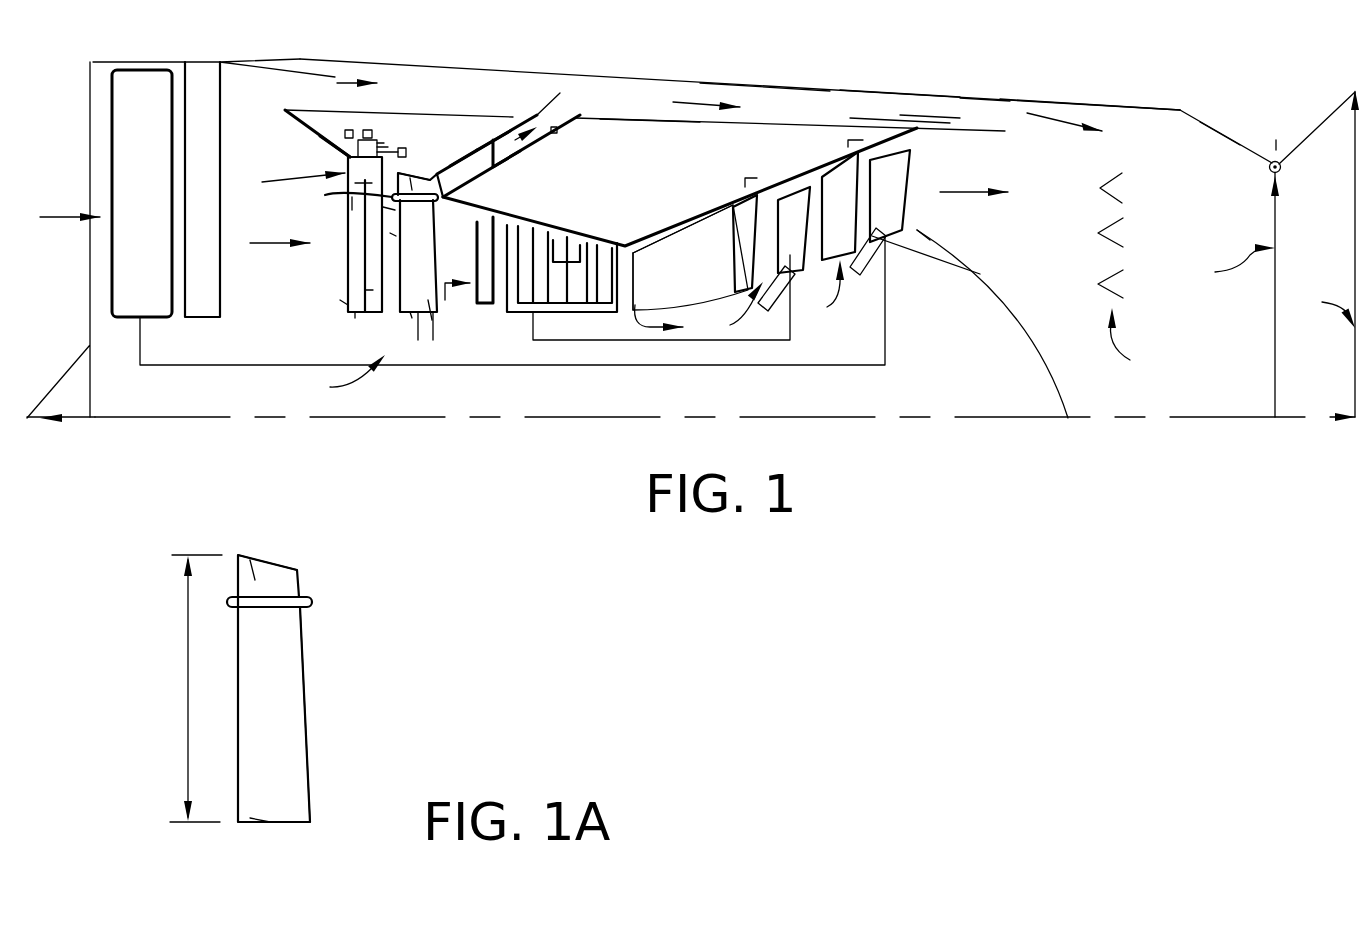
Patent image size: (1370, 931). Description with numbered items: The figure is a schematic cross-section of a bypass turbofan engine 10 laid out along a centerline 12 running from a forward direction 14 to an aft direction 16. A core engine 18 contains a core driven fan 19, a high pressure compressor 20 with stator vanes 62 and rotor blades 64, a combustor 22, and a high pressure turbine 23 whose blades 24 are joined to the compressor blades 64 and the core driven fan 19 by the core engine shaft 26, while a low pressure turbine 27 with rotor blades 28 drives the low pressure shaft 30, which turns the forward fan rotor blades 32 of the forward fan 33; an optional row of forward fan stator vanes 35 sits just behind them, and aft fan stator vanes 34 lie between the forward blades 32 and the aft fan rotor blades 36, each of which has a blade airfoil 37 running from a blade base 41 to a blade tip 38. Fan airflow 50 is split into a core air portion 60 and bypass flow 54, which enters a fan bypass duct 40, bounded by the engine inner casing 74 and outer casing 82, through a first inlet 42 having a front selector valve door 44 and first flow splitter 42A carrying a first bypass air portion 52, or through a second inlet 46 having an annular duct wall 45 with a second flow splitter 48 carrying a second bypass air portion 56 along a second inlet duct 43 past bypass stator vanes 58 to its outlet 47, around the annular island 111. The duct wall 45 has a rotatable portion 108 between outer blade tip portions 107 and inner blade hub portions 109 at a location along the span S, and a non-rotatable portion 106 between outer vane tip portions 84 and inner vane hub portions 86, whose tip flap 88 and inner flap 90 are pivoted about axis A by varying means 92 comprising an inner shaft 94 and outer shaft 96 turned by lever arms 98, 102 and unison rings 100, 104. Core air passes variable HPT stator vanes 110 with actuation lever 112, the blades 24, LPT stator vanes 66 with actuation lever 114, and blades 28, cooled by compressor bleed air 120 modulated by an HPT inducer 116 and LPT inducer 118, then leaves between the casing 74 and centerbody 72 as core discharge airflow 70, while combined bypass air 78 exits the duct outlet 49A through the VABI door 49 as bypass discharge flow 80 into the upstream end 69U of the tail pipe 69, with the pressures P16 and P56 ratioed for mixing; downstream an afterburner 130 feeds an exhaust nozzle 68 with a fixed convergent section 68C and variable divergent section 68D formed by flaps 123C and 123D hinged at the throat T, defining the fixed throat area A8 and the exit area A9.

In FIG. 1, the bypass turbofan engine 10 is at (626, 52).
In FIG. 1, the centerline 12 is at (960, 417).
In FIG. 1, the forward direction 14 is at (100, 420).
In FIG. 1, the aft direction 16 is at (1300, 420).
In FIG. 1, the core engine 18 is at (660, 210).
In FIG. 1, the core driven fan 19 is at (341, 377).
In FIG. 1, the high pressure compressor 20 is at (553, 212).
In FIG. 1, the combustor 22 is at (673, 279).
In FIG. 1, the high pressure turbine 23 is at (699, 311).
In FIG. 1, the high pressure turbine blades 24 is at (800, 198).
In FIG. 1, the core engine shaft 26 is at (540, 345).
In FIG. 1, the low pressure turbine 27 is at (819, 290).
In FIG. 1, the low pressure turbine rotor blades 28 is at (893, 223).
In FIG. 1, the low pressure shaft 30 is at (665, 366).
In FIG. 1, the forward fan rotor blades 32 is at (123, 171).
In FIG. 1, the forward fan 33 is at (163, 351).
In FIG. 1, the aft fan stator vanes 34 is at (355, 318).
In FIG. 1, the forward fan stator vanes 35 is at (200, 75).
In FIG. 1, the aft fan rotor blades 36 is at (410, 316).
In FIG. 1A, the aft fan rotor blades 36 is at (277, 825).
In FIG. 1, the blade airfoil 37 is at (348, 268).
In FIG. 1A, the blade airfoil 37 is at (253, 720).
In FIG. 1, the blade tip 38 is at (402, 172).
In FIG. 1A, the blade tip 38 is at (268, 562).
In FIG. 1, the fan bypass duct 40 is at (766, 100).
In FIG. 1A, the blade base 41 is at (250, 818).
In FIG. 1, the first inlet 42 is at (247, 96).
In FIG. 1, the first flow splitter 42A is at (286, 108).
In FIG. 1, the second inlet duct 43 is at (558, 131).
In FIG. 1, the front selector valve door 44 is at (293, 66).
In FIG. 1, the annular duct wall 45 is at (392, 234).
In FIG. 1, the second inlet 46 is at (289, 185).
In FIG. 1, the second inlet duct outlet 47 is at (575, 118).
In FIG. 1, the second flow splitter 48 is at (325, 194).
In FIG. 1, the rear variable area bypass injector door 49 is at (1005, 122).
In FIG. 1, the fan bypass duct outlet 49A is at (858, 124).
In FIG. 1, the fan airflow 50 is at (72, 218).
In FIG. 1, the first bypass air portion 52 is at (348, 83).
In FIG. 1, the bypass flow 54 is at (273, 245).
In FIG. 1, the second bypass air portion 56 is at (513, 145).
In FIG. 1, the bypass stator vanes 58 is at (484, 158).
In FIG. 1, the core air portion 60 is at (445, 300).
In FIG. 1, the high pressure compressor stator vanes 62 is at (480, 218).
In FIG. 1, the high pressure compressor rotor blades 64 is at (580, 236).
In FIG. 1, the low pressure turbine stator vanes 66 is at (842, 170).
In FIG. 1, the exhaust nozzle 68 is at (1278, 85).
In FIG. 1, the convergent section 68C is at (1257, 226).
In FIG. 1, the divergent section 68D is at (1343, 259).
In FIG. 1, the tail pipe 69 is at (1100, 103).
In FIG. 1, the upstream end 69U is at (1041, 210).
In FIG. 1, the core discharge airflow 70 is at (968, 190).
In FIG. 1, the centerbody 72 is at (998, 292).
In FIG. 1, the engine inner casing 74 is at (705, 149).
In FIG. 1, the combined bypass air 78 is at (697, 100).
In FIG. 1, the bypass discharge flow 80 is at (1040, 122).
In FIG. 1, the engine outer casing 82 is at (907, 92).
In FIG. 1, the outer vane tip portions 84 is at (347, 163).
In FIG. 1, the inner vane hub portions 86 is at (340, 300).
In FIG. 1, the trailing-edge tip flap 88 is at (372, 183).
In FIG. 1, the trailing-edge inner flap 90 is at (373, 290).
In FIG. 1, the varying means 92 is at (380, 112).
In FIG. 1, the inner shaft 94 is at (387, 153).
In FIG. 1, the outer shaft 96 is at (358, 150).
In FIG. 1, the lever arm 98 is at (347, 132).
In FIG. 1, the unison ring 100 is at (363, 136).
In FIG. 1, the lever arm 102 is at (383, 158).
In FIG. 1, the unison ring 104 is at (405, 149).
In FIG. 1, the non-rotatable portion 106 is at (350, 200).
In FIG. 1, the outer blade tip portions 107 is at (410, 180).
In FIG. 1A, the outer blade tip portions 107 is at (257, 575).
In FIG. 1, the rotatable portion 108 is at (455, 203).
In FIG. 1A, the rotatable portion 108 is at (287, 597).
In FIG. 1, the inner blade hub portions 109 is at (428, 300).
In FIG. 1A, the inner blade hub portions 109 is at (290, 752).
In FIG. 1, the high pressure turbine stator vanes 110 is at (732, 232).
In FIG. 1, the annular island 111 is at (479, 148).
In FIG. 1, the actuation lever 112 is at (747, 178).
In FIG. 1, the actuation lever 114 is at (852, 140).
In FIG. 1, the HPT inducer 116 is at (770, 315).
In FIG. 1, the LPT inducer 118 is at (857, 273).
In FIG. 1, the compressor bleed air 120 is at (632, 325).
In FIG. 1, the convergent flaps 123C is at (1230, 140).
In FIG. 1, the divergent flaps 123D is at (1330, 114).
In FIG. 1, the afterburner 130 is at (1140, 344).
In FIG. 1, the axis A is at (386, 208).
In FIG. 1, the fixed throat area A8 is at (1229, 267).
In FIG. 1, the nozzle exit area A9 is at (1319, 307).
In FIG. 1, the bypass duct aft pressure P16 is at (927, 115).
In FIG. 1, the low pressure turbine exit pressure P56 is at (915, 210).
In FIG. 1, the throat T is at (1276, 140).
In FIG. 1A, the span S is at (196, 688).